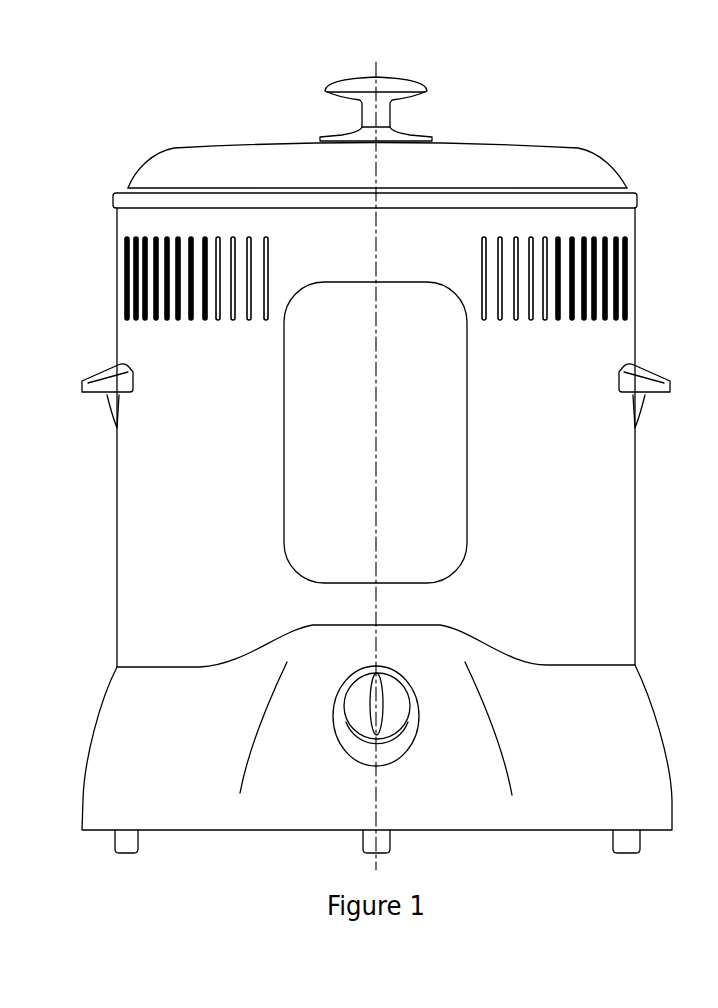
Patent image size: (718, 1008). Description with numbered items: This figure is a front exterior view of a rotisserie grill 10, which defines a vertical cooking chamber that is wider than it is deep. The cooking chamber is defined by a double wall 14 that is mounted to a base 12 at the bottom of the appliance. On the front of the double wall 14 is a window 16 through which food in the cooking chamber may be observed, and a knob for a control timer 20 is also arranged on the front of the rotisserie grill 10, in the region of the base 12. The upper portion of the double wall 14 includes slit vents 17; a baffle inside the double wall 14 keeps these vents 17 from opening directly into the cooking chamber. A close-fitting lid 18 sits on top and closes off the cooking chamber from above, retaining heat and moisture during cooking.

The rotisserie grill 10 is at (105, 225).
The base 12 is at (633, 695).
The double wall 14 is at (617, 477).
The window 16 is at (426, 487).
The slit vents 17 is at (573, 257).
The lid 18 is at (493, 153).
The control timer 20 is at (392, 712).